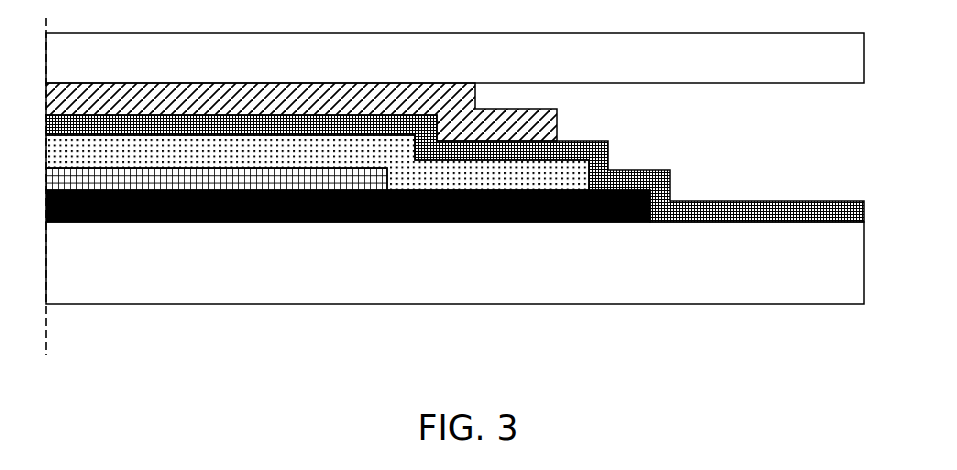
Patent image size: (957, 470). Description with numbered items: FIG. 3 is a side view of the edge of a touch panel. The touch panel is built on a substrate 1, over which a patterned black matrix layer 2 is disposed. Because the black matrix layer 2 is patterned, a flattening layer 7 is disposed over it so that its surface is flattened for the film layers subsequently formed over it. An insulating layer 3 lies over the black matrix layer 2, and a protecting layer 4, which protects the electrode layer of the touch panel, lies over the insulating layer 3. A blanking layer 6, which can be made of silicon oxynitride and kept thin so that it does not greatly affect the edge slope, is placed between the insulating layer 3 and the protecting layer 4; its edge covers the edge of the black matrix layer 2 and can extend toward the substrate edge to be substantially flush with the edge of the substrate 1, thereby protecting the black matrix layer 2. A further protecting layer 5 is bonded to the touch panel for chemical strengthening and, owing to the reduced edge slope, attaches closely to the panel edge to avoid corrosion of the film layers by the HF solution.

The substrate 1 is at (143, 278).
The black matrix layer 2 is at (215, 222).
The insulating layer 3 is at (350, 148).
The protecting layer 4 is at (463, 122).
The protecting layer 5 is at (690, 64).
The blanking layer 6 is at (730, 208).
The flattening layer 7 is at (282, 183).